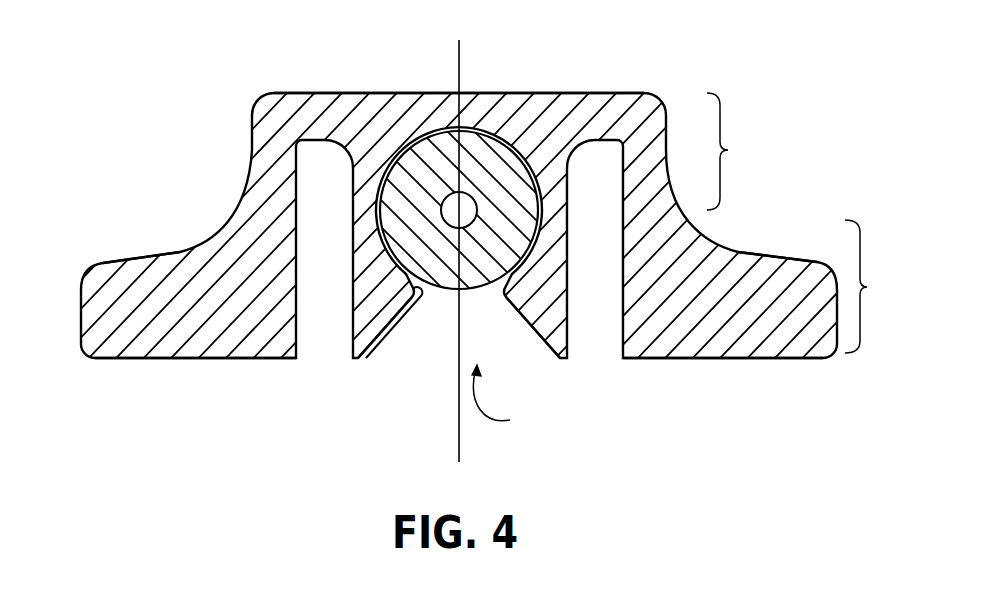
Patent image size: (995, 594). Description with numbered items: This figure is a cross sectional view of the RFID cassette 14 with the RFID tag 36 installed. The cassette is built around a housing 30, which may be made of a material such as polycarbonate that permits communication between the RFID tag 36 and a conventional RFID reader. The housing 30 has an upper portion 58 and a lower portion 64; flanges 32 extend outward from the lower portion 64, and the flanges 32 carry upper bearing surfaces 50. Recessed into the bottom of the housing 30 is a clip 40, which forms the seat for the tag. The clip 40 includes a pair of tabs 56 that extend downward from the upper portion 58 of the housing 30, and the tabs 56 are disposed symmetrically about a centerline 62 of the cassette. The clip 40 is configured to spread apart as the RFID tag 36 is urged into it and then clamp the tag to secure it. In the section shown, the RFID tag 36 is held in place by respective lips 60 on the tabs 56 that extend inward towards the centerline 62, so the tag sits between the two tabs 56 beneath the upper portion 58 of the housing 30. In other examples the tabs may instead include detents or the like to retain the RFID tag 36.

The RFID cassette 14 is at (541, 60).
The housing 30 is at (400, 93).
The flanges 32 is at (142, 358).
The RFID tag 36 is at (520, 206).
The clip 40 is at (506, 396).
The upper bearing surfaces 50 is at (167, 253).
The tabs 56 is at (360, 358).
The upper portion 58 is at (734, 151).
The lips 60 is at (424, 297).
The centerline 62 is at (457, 238).
The lower portion 64 is at (872, 286).